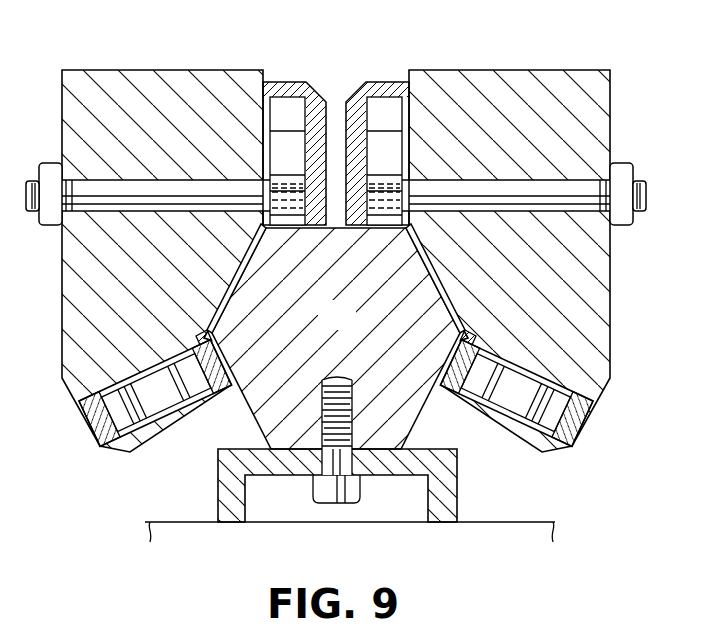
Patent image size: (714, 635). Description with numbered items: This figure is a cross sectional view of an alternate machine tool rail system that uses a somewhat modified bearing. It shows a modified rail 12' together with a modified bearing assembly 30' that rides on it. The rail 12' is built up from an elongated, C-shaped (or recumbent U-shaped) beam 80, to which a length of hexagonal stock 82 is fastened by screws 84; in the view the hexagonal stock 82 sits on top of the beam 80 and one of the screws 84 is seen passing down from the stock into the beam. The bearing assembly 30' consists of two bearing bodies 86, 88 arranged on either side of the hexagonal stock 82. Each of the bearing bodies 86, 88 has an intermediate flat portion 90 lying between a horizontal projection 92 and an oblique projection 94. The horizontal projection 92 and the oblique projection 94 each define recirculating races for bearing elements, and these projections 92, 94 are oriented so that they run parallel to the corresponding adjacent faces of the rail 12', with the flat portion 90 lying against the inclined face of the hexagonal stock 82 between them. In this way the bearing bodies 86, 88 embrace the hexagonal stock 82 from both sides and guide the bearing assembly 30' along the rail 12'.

The beam 80 is at (247, 483).
The hexagonal stock 82 is at (352, 326).
The screws 84 is at (352, 398).
The bearing body 86 is at (489, 84).
The bearing body 88 is at (148, 84).
The intermediate flat portion 90 is at (232, 280).
The horizontal projection 92 is at (273, 149).
The oblique projection 94 is at (165, 367).
The modified bearing assembly 30' is at (653, 317).
The modified rail 12' is at (482, 450).